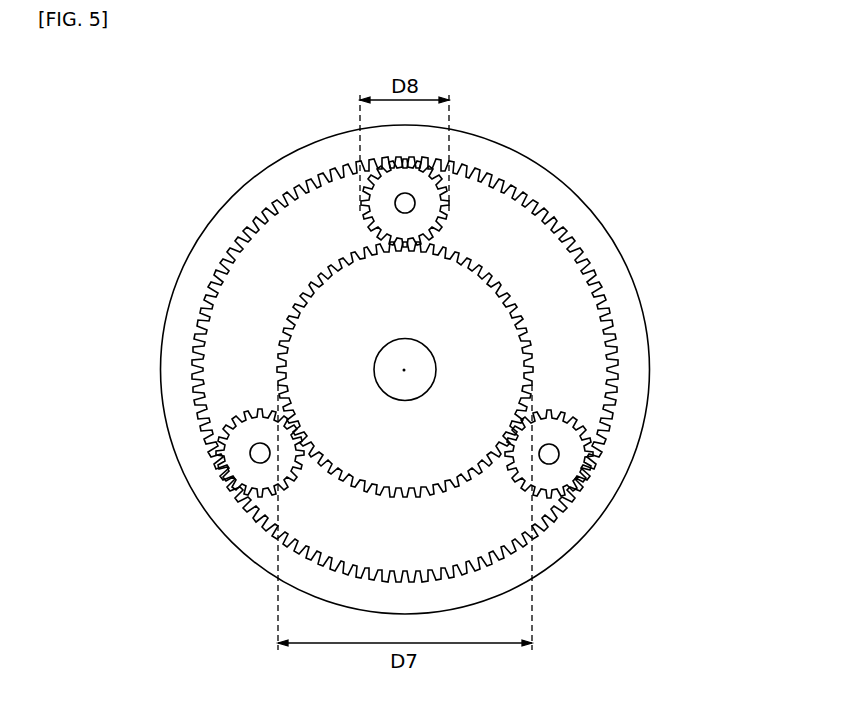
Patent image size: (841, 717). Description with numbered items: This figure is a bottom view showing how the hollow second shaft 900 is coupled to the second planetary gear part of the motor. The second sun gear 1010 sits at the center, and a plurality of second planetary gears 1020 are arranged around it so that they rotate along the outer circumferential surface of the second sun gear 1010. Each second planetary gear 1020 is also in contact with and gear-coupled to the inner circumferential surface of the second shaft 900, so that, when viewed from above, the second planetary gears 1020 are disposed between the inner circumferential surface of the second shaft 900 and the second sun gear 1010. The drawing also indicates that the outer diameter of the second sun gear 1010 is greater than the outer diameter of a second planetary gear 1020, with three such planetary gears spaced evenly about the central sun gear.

The second shaft 900 is at (264, 191).
The second sun gear 1010 is at (478, 360).
The second planetary gear 1020 is at (427, 203).